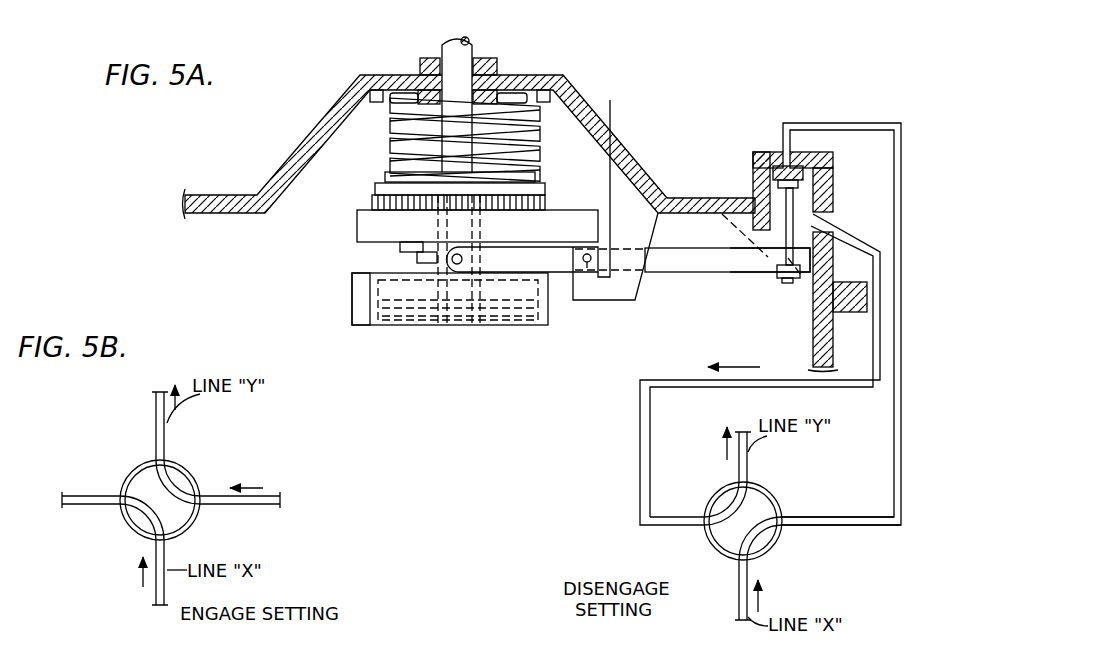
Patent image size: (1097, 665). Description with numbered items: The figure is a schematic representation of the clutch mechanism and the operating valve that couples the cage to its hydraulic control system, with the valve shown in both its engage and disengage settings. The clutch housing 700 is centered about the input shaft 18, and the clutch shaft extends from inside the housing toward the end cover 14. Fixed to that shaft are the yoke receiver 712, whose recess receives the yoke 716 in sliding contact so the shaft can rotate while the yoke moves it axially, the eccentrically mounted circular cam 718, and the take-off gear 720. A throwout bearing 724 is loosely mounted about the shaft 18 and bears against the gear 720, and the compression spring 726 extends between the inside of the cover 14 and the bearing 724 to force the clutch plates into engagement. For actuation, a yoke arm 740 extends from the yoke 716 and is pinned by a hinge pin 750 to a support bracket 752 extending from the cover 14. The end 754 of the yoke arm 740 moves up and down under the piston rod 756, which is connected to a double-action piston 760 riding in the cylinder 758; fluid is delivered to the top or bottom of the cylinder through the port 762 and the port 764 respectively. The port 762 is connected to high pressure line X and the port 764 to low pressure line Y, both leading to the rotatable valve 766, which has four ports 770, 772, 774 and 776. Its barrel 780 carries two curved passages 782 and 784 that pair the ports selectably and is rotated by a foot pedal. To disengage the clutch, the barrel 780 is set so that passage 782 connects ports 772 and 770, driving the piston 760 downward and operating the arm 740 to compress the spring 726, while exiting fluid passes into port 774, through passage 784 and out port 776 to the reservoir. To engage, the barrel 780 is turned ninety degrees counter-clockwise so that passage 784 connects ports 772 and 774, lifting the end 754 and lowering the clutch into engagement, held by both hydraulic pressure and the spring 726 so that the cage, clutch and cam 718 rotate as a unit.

In FIG. 5A, the end cover 14 is at (598, 117).
In FIG. 5A, the input shaft 18 is at (477, 51).
In FIG. 5A, the clutch housing 700 is at (350, 295).
In FIG. 5A, the yoke receiver 712 is at (402, 271).
In FIG. 5A, the yoke 716 is at (505, 262).
In FIG. 5A, the circular cam 718 is at (353, 230).
In FIG. 5A, the take-off gear 720 is at (548, 200).
In FIG. 5A, the throwout bearing 724 is at (373, 183).
In FIG. 5A, the compression spring 726 is at (390, 140).
In FIG. 5A, the yoke arm 740 is at (655, 274).
In FIG. 5A, the hinge pin 750 is at (585, 269).
In FIG. 5A, the support bracket 752 is at (615, 304).
In FIG. 5A, the end of yoke arm 754 is at (738, 274).
In FIG. 5A, the piston rod 756 is at (783, 237).
In FIG. 5A, the cylinder 758 is at (781, 150).
In FIG. 5A, the piston 760 is at (770, 152).
In FIG. 5A, the port 762 is at (786, 181).
In FIG. 5A, the port 764 is at (833, 206).
In FIG. 5A, the rotatable valve 766 is at (777, 495).
In FIG. 5A, the valve port 770 is at (782, 517).
In FIG. 5B, the valve port 770 is at (200, 508).
In FIG. 5A, the valve port 772 is at (750, 567).
In FIG. 5B, the valve port 772 is at (150, 545).
In FIG. 5A, the valve port 774 is at (702, 528).
In FIG. 5B, the valve port 774 is at (118, 492).
In FIG. 5A, the valve port 776 is at (737, 477).
In FIG. 5B, the valve port 776 is at (167, 455).
In FIG. 5A, the valve barrel 780 is at (760, 490).
In FIG. 5A, the curved passage 782 is at (762, 542).
In FIG. 5B, the curved passage 782 is at (180, 487).
In FIG. 5A, the curved passage 784 is at (718, 492).
In FIG. 5B, the curved passage 784 is at (138, 515).